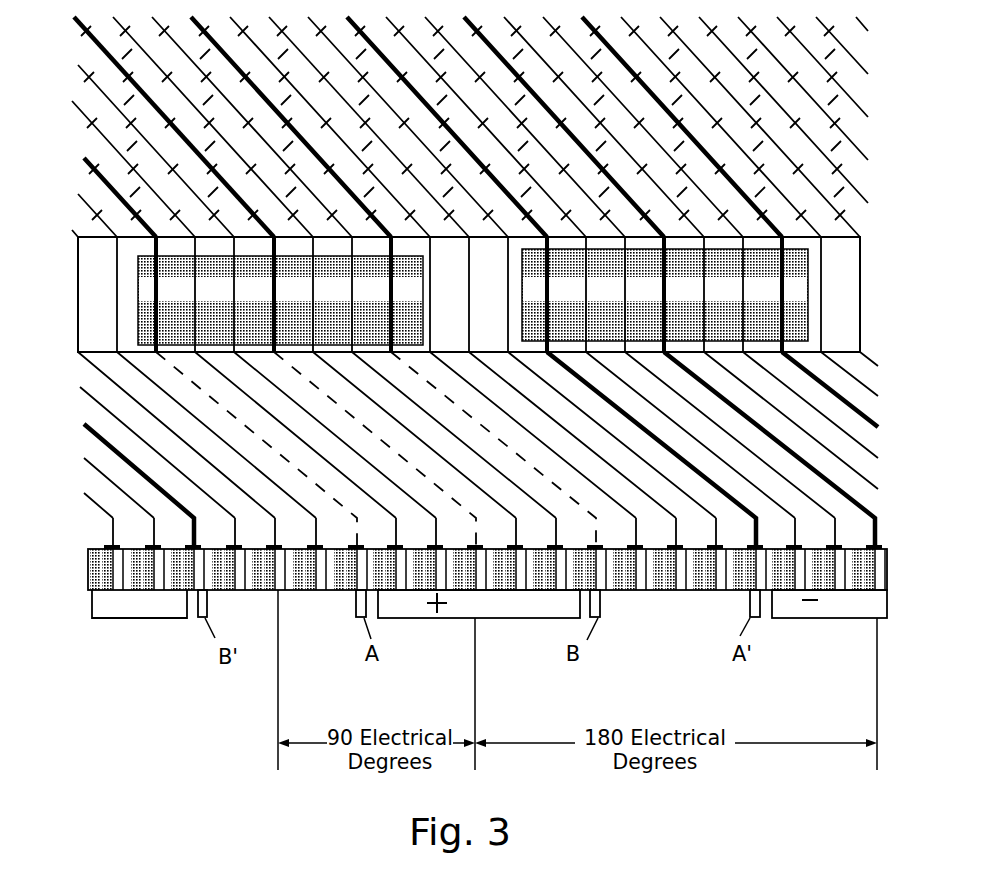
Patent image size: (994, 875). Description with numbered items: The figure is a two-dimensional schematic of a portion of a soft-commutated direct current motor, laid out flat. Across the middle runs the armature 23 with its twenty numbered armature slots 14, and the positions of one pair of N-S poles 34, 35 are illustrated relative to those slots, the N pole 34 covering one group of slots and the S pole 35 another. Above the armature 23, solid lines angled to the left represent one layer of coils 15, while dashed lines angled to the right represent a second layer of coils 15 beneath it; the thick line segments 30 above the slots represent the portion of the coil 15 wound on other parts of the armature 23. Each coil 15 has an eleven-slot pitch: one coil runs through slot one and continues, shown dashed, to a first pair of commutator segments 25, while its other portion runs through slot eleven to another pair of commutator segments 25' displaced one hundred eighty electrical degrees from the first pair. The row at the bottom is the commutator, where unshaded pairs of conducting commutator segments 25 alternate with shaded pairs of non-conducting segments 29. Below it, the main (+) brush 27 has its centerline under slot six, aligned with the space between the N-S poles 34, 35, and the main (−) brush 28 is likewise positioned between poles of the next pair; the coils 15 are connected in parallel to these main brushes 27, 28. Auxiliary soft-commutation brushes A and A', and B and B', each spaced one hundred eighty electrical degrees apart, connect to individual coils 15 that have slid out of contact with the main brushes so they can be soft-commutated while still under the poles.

The armature slots 14 is at (272, 249).
The coil 15 is at (492, 176).
The armature 23 is at (790, 236).
The commutator segments 25 is at (487, 581).
The commutator segments 25' is at (781, 471).
The main (+) brush 27 is at (428, 618).
The main (−) brush 28 is at (792, 618).
The non-conducting segments 29 is at (660, 588).
The thick line segments 30 is at (368, 118).
The N pole 34 is at (425, 318).
The S pole 35 is at (807, 308).